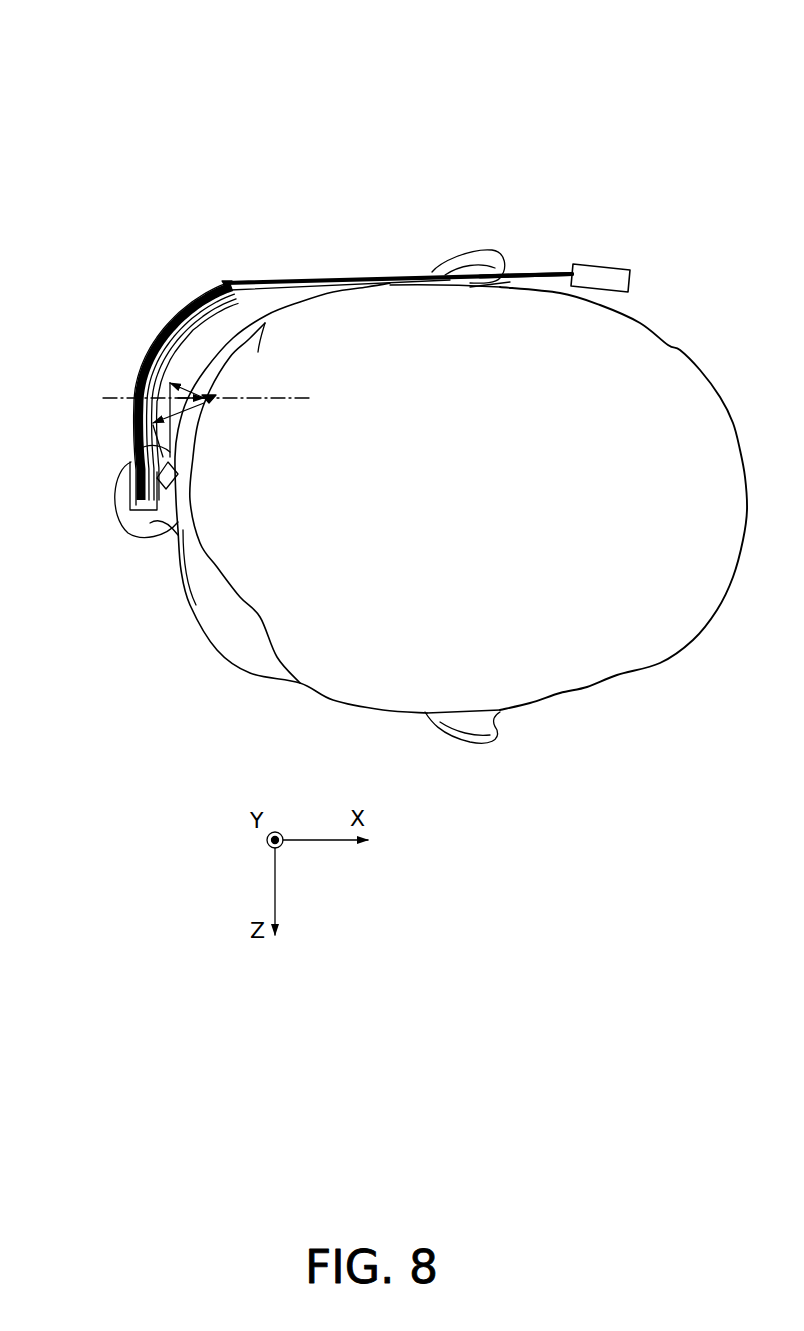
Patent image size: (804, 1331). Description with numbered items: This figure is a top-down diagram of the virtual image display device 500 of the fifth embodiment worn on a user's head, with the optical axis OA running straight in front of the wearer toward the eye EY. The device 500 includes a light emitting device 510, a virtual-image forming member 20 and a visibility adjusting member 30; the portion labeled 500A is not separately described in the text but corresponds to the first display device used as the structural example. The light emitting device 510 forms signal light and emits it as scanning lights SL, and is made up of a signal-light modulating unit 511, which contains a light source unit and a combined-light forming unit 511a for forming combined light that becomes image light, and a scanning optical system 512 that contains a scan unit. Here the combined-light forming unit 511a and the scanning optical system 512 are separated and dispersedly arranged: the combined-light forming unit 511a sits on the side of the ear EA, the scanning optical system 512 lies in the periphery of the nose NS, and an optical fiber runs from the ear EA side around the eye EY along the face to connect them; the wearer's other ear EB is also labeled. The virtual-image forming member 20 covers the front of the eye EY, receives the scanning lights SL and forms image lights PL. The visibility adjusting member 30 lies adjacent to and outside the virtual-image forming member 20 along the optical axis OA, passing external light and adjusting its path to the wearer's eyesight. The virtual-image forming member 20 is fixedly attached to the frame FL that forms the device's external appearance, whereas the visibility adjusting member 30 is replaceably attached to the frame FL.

The virtual image display device 500 is at (333, 320).
The frame corner / display section 500A is at (227, 281).
The light emitting device 510 is at (433, 169).
The signal-light modulating unit 511 is at (552, 228).
The combined-light forming unit 511a is at (610, 266).
The scanning optical system 512 is at (158, 553).
The virtual-image forming member 20 is at (144, 368).
The visibility adjusting member 30 is at (130, 488).
The frame FL is at (164, 340).
The image lights PL is at (178, 345).
The scanning lights SL is at (135, 440).
The eye EY is at (210, 392).
The optical axis OA is at (108, 398).
The ear EA is at (468, 258).
The ear EB is at (518, 270).
The nose NS is at (135, 540).